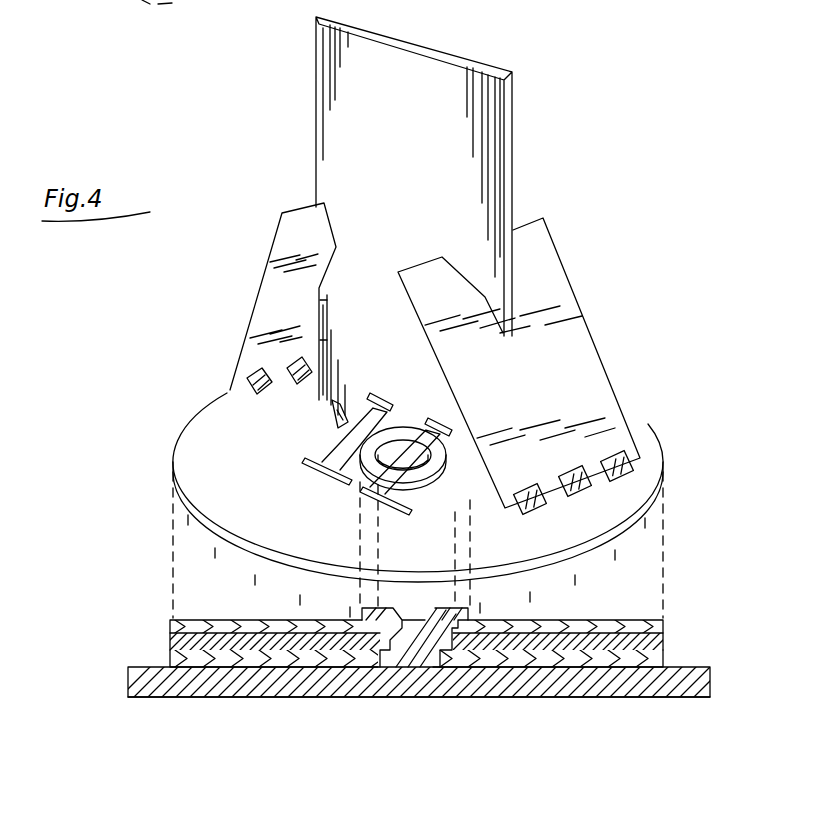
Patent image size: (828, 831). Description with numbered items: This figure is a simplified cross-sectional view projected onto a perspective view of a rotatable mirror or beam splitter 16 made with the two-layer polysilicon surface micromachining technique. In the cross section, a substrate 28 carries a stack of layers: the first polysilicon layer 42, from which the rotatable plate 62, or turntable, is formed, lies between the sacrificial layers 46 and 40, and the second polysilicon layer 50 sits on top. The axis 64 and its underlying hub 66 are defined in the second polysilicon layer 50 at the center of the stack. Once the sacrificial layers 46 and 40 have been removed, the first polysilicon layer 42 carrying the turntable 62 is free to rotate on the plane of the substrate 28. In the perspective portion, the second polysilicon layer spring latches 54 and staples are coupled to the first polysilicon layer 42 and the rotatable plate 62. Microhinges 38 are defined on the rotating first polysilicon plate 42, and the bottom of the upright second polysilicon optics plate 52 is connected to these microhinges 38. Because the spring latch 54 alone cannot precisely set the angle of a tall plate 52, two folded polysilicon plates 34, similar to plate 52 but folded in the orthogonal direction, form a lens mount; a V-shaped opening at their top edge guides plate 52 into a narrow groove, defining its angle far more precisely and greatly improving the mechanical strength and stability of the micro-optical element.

The rotatable mirror or beam splitter 16 is at (550, 60).
The plate 52 is at (514, 125).
The folded polysilicon plates 34 is at (297, 240).
The microhinges 38 is at (338, 400).
The axis 64 is at (245, 380).
The spring latch 54 is at (340, 445).
The rotatable plate 62 is at (645, 436).
The second polysilicon layer 50 is at (362, 608).
The sacrificial layer 46 is at (641, 622).
The first polysilicon layer 42 is at (172, 641).
The sacrificial layer 40 is at (170, 656).
The substrate 28 is at (130, 677).
The hub 66 is at (420, 697).